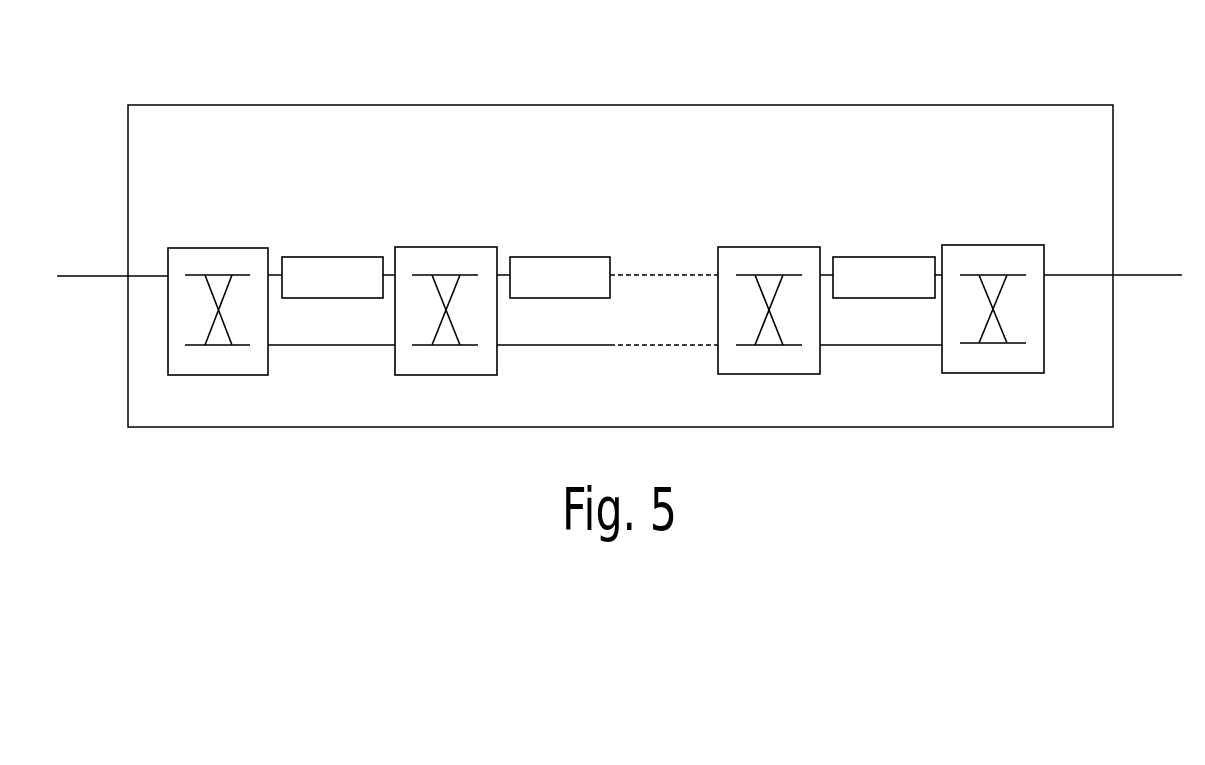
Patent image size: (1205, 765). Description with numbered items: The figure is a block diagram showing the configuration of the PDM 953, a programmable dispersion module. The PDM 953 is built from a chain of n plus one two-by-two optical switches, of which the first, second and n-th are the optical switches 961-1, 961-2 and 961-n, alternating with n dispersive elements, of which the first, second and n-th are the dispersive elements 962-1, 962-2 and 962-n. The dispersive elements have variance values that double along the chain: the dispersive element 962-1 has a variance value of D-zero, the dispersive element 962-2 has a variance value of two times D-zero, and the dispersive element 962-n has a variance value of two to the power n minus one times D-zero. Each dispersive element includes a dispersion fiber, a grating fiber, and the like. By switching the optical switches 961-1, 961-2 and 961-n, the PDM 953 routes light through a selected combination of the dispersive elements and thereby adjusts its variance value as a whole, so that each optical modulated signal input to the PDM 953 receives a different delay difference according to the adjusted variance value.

The PDM 953 is at (972, 105).
The two-by-two optical switch 961-1 is at (196, 248).
The dispersive element 962-1 is at (292, 257).
The two-by-two optical switch 961-2 is at (418, 247).
The dispersive element 962-2 is at (520, 257).
The two-by-two optical switch 961-n is at (742, 247).
The dispersive element 962-n is at (842, 257).